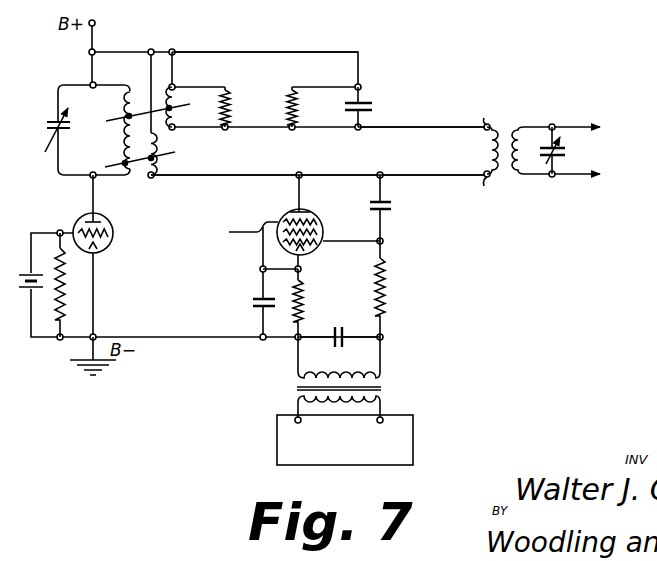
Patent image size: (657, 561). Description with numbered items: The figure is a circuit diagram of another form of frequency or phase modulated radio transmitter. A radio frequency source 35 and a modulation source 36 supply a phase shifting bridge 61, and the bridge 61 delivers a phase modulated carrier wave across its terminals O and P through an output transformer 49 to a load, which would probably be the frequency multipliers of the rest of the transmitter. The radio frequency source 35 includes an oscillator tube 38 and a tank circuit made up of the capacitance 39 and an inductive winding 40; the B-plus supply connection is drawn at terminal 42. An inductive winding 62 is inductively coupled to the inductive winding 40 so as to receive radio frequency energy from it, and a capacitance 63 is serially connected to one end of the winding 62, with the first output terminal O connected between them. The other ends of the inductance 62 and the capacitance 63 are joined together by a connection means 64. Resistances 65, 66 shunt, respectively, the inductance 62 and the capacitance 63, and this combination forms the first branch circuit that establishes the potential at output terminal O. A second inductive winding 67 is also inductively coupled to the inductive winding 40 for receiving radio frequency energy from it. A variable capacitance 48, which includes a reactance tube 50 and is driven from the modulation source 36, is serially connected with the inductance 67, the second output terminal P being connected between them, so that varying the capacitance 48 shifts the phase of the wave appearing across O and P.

The radio frequency source 35 is at (77, 141).
The modulation source 36 is at (398, 421).
The oscillator tube 38 is at (112, 227).
The capacitance 39 is at (66, 130).
The inductive winding 40 is at (120, 111).
The B+ supply terminal 42 is at (90, 53).
The variable capacitance 48 is at (297, 297).
The output transformer 49 is at (535, 116).
The reactance tube 50 is at (288, 211).
The phase shifting bridge 61 is at (250, 167).
The inductive winding 62 is at (177, 92).
The capacitance 63 is at (374, 100).
The connection means 64 is at (305, 52).
The resistance 65 is at (232, 88).
The resistance 66 is at (287, 108).
The second inductive winding 67 is at (158, 158).